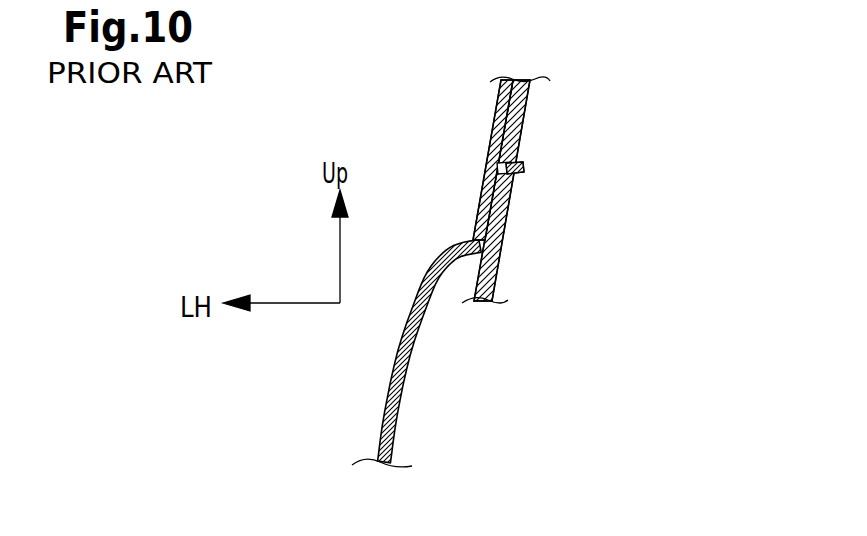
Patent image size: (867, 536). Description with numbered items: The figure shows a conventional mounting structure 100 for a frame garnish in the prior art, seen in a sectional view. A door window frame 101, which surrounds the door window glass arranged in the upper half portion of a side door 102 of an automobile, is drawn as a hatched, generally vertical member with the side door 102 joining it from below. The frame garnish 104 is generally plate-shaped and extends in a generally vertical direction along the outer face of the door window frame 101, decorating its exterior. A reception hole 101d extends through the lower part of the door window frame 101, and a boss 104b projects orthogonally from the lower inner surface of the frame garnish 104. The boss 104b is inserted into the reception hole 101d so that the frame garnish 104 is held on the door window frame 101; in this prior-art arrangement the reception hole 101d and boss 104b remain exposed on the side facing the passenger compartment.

The mounting structure 100 is at (677, 126).
The door window frame 101 is at (528, 110).
The reception hole 101d is at (524, 168).
The side door 102 is at (357, 412).
The frame garnish 104 is at (499, 112).
The boss 104b is at (510, 172).